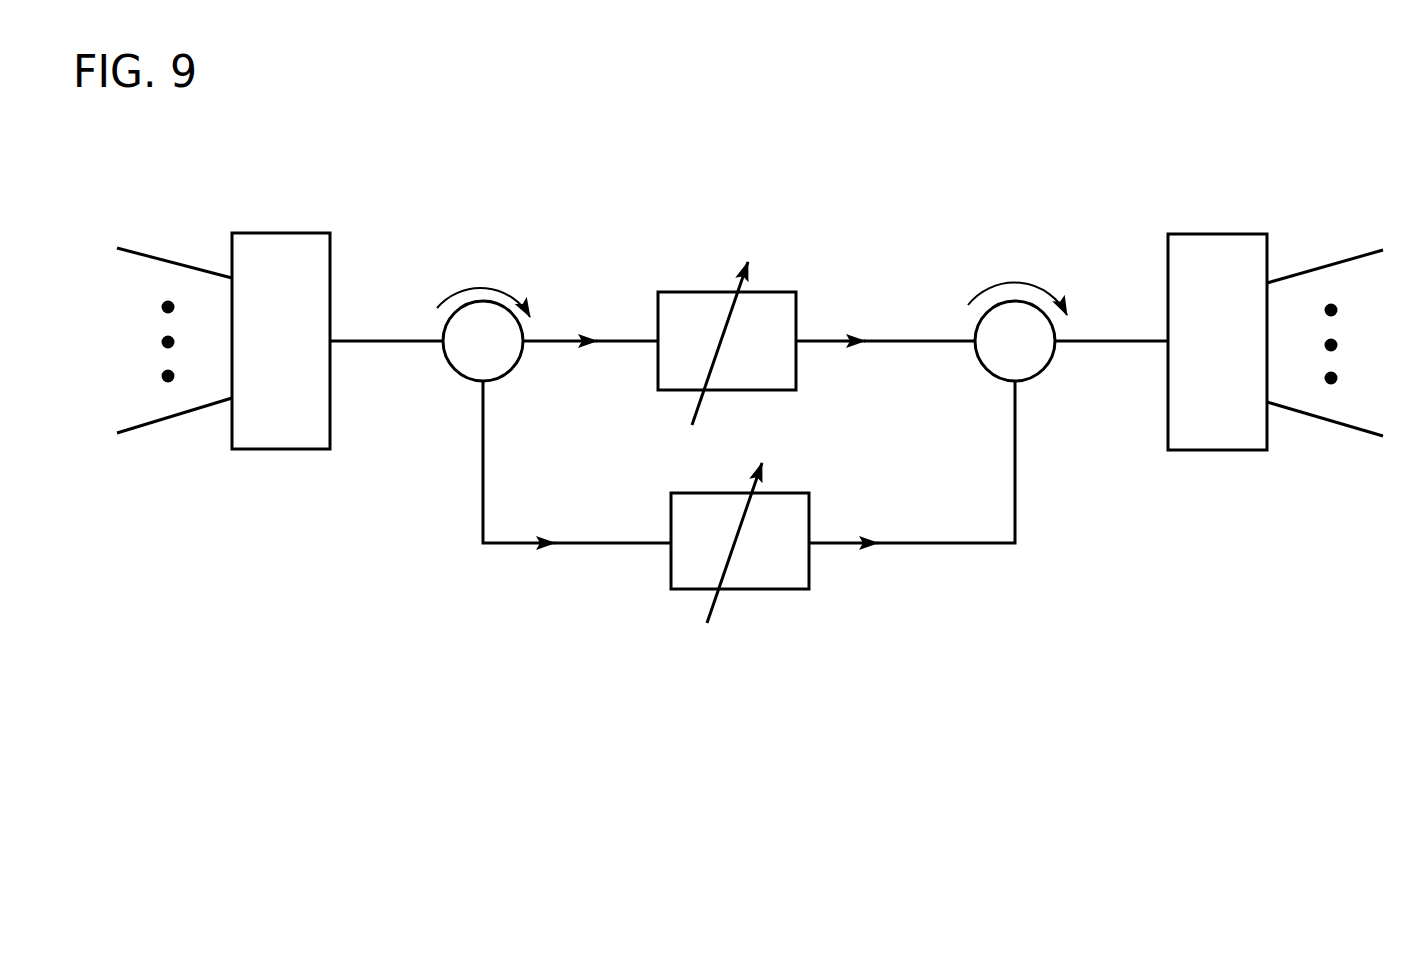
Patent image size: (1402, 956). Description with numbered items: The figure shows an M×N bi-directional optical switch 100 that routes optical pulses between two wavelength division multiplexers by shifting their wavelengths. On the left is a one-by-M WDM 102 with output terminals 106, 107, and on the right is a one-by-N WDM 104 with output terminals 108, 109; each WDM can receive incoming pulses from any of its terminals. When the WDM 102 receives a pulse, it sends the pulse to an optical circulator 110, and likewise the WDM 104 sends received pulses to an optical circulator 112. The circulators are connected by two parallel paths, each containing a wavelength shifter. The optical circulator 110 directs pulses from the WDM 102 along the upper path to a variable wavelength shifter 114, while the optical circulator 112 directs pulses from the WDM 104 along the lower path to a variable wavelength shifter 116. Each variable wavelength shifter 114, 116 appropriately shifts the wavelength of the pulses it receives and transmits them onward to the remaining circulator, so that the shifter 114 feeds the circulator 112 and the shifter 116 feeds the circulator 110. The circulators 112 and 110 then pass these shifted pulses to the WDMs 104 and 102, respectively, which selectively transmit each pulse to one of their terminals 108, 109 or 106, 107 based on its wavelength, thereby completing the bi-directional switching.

The M×N bi-directional optical switch 100 is at (532, 610).
The 1×M WDM 102 is at (288, 233).
The 1×N WDM 104 is at (1203, 234).
The output terminal 106 is at (162, 257).
The output terminal 107 is at (158, 420).
The output terminal 108 is at (1322, 265).
The output terminal 109 is at (1323, 422).
The optical circulator 110 is at (508, 370).
The optical circulator 112 is at (985, 368).
The variable wavelength shifter 114 is at (695, 290).
The variable wavelength shifter 116 is at (767, 590).